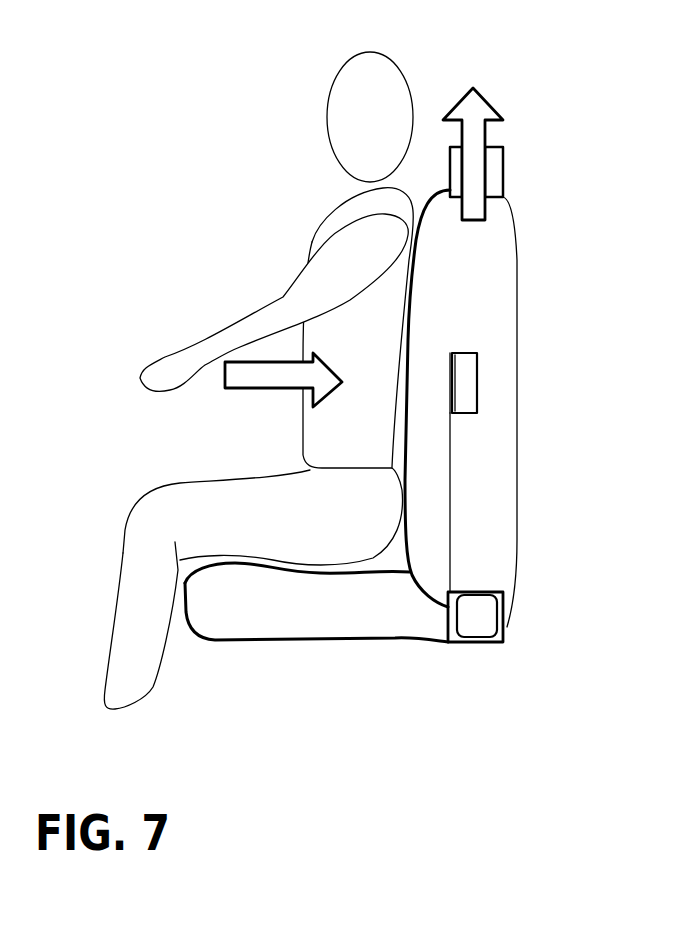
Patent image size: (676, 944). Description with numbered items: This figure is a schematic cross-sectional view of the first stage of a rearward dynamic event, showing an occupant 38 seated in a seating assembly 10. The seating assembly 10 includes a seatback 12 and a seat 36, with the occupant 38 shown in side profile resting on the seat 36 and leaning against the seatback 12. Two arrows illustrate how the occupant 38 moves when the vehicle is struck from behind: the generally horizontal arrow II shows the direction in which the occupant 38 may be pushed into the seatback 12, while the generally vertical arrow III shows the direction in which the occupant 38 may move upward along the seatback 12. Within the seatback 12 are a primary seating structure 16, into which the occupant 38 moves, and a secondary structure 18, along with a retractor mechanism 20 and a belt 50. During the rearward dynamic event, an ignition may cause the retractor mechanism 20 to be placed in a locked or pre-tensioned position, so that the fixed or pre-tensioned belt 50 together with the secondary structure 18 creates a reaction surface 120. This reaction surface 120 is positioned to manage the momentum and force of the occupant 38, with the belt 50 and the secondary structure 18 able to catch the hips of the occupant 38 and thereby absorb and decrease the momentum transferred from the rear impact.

The seating assembly 10 is at (578, 163).
The seatback 12 is at (523, 510).
The primary seating structure 16 is at (412, 332).
The secondary structure 18 is at (453, 458).
The retractor mechanism 20 is at (477, 386).
The seat 36 is at (338, 618).
The occupant 38 is at (342, 215).
The belt 50 is at (455, 353).
The reaction surface 120 is at (407, 432).
The arrow II is at (255, 380).
The arrow III is at (480, 135).